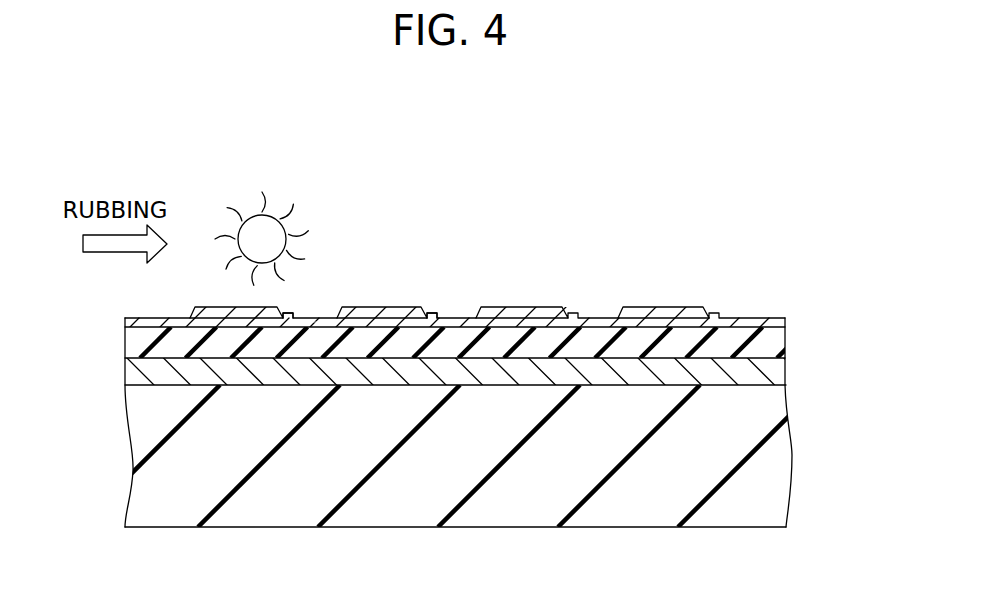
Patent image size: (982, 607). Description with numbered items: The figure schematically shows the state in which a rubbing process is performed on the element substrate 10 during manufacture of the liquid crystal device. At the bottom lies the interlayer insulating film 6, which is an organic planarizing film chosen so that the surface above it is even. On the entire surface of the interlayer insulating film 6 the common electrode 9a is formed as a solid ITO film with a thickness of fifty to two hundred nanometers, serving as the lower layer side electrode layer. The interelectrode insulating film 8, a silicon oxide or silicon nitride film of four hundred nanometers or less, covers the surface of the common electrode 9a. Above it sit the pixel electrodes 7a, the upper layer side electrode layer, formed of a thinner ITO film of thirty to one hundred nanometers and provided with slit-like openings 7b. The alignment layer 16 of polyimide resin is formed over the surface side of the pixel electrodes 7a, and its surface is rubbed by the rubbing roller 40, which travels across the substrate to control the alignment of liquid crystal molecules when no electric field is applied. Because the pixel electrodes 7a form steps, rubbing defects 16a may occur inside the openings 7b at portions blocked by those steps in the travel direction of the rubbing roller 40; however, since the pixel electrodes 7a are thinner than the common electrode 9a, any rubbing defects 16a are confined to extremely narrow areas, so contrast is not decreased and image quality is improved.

The rubbing roller 40 is at (282, 233).
The pixel electrodes 7a is at (228, 322).
The slit-like openings 7b is at (313, 318).
The alignment layer 16 is at (672, 307).
The rubbing defects 16a is at (426, 319).
The interelectrode insulating film 8 is at (797, 323).
The common electrode 9a is at (628, 372).
The interlayer insulating film 6 is at (797, 527).
The element substrate 10 is at (736, 266).